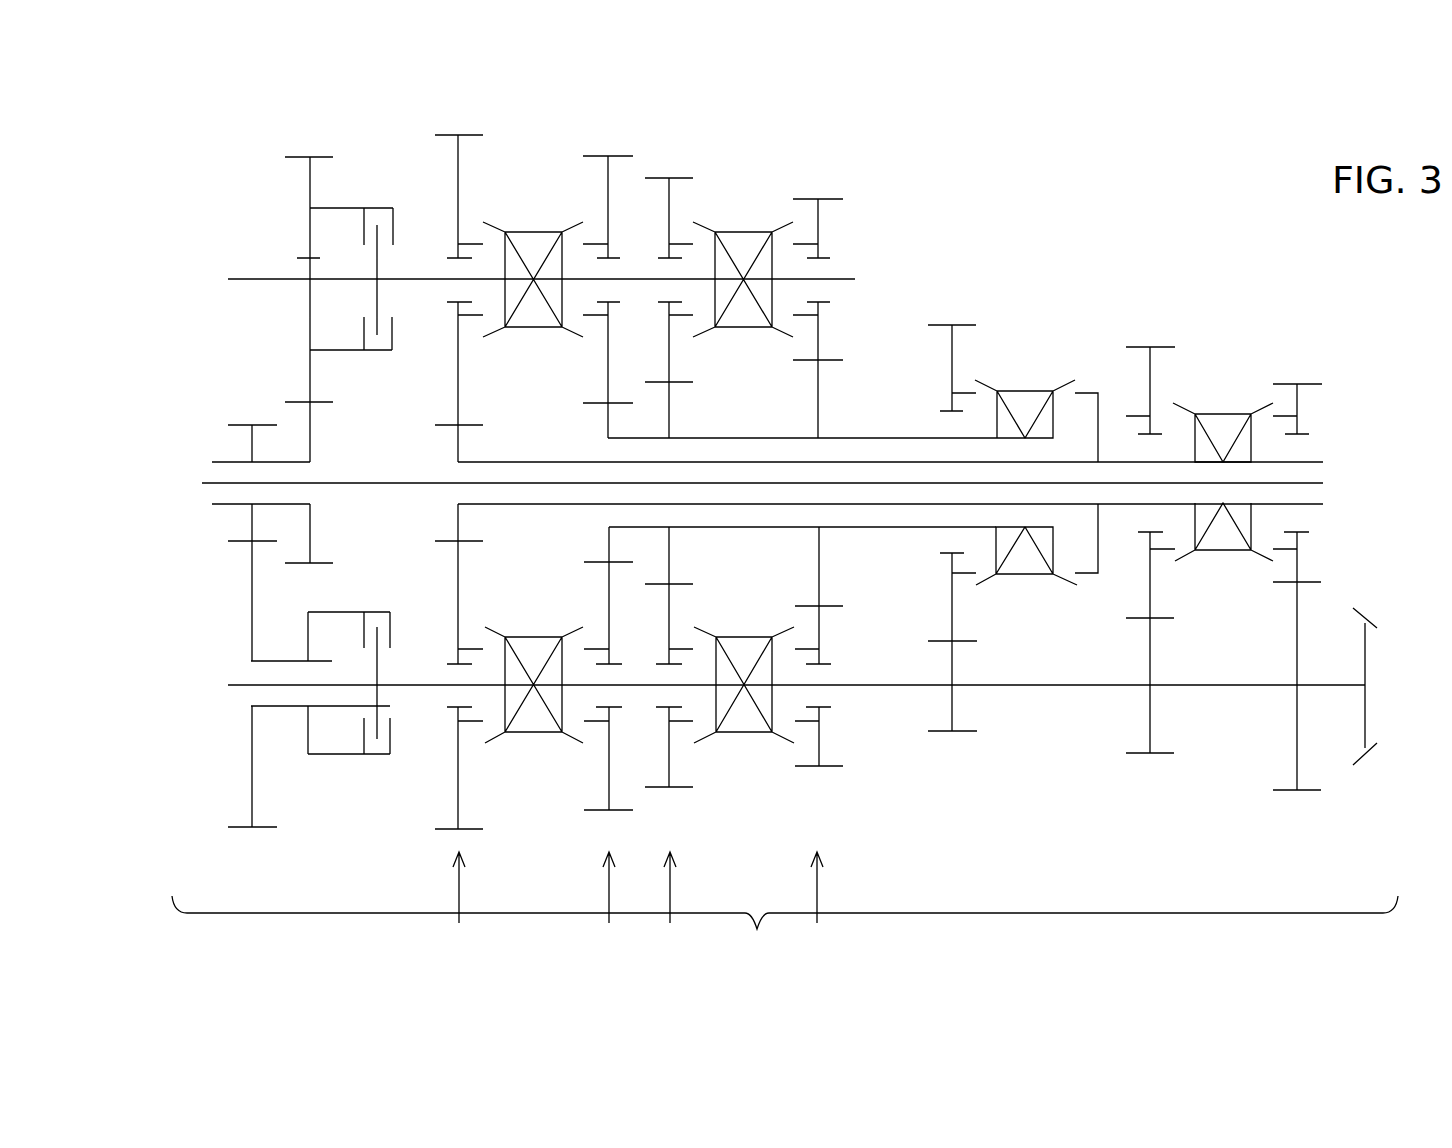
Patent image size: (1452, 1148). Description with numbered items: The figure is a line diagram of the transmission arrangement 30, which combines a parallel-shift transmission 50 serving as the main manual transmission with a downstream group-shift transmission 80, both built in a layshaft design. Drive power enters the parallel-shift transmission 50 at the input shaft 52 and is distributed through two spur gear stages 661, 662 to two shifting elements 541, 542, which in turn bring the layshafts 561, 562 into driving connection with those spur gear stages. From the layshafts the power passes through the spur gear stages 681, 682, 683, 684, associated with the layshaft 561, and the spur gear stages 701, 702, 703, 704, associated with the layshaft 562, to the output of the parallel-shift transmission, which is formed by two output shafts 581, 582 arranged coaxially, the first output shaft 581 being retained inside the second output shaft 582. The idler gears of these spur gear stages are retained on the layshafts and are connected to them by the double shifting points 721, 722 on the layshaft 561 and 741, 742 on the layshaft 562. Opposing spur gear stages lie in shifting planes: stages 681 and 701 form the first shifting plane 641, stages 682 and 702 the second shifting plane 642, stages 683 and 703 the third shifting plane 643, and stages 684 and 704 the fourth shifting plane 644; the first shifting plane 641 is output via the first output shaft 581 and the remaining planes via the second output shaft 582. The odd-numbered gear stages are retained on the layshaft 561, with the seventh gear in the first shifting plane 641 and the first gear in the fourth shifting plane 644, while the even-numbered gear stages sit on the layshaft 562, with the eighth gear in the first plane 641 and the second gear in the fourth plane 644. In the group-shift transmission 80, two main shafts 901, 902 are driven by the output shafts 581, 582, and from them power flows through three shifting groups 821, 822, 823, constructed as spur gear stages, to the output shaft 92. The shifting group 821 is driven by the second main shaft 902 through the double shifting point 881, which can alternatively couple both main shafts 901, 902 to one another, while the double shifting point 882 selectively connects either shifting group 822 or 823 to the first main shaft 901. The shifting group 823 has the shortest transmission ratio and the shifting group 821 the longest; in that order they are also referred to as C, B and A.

The transmission arrangement 30 is at (785, 928).
The parallel-shift transmission 50 is at (529, 80).
The input shaft 52 is at (216, 462).
The shifting element 541 is at (335, 208).
The shifting element 542 is at (323, 754).
The layshaft 561 is at (855, 279).
The layshaft 562 is at (843, 688).
The first output shaft 581 is at (510, 505).
The second output shaft 582 is at (853, 528).
The first shifting plane 641 is at (456, 907).
The second shifting plane 642 is at (609, 907).
The third shifting plane 643 is at (671, 907).
The fourth shifting plane 644 is at (824, 907).
The spur gear stage 661 is at (238, 396).
The spur gear stage 662 is at (240, 558).
The spur gear stage 681 is at (441, 411).
The spur gear stage 682 is at (594, 386).
The spur gear stage 683 is at (684, 398).
The spur gear stage 684 is at (838, 378).
The spur gear stage 701 is at (437, 548).
The spur gear stage 702 is at (592, 550).
The spur gear stage 703 is at (679, 561).
The spur gear stage 704 is at (802, 596).
The double shifting point 721 is at (532, 232).
The double shifting point 722 is at (735, 232).
The double shifting point 741 is at (518, 735).
The double shifting point 742 is at (733, 735).
The group-shift transmission 80 is at (1244, 84).
The shifting group 821 is at (964, 621).
The shifting group 822 is at (1162, 599).
The shifting group 823 is at (1310, 562).
The double shifting point 881 is at (1018, 391).
The double shifting point 882 is at (1208, 414).
The first main shaft 901 is at (1121, 460).
The second main shaft 902 is at (928, 528).
The output shaft 92 is at (1082, 687).